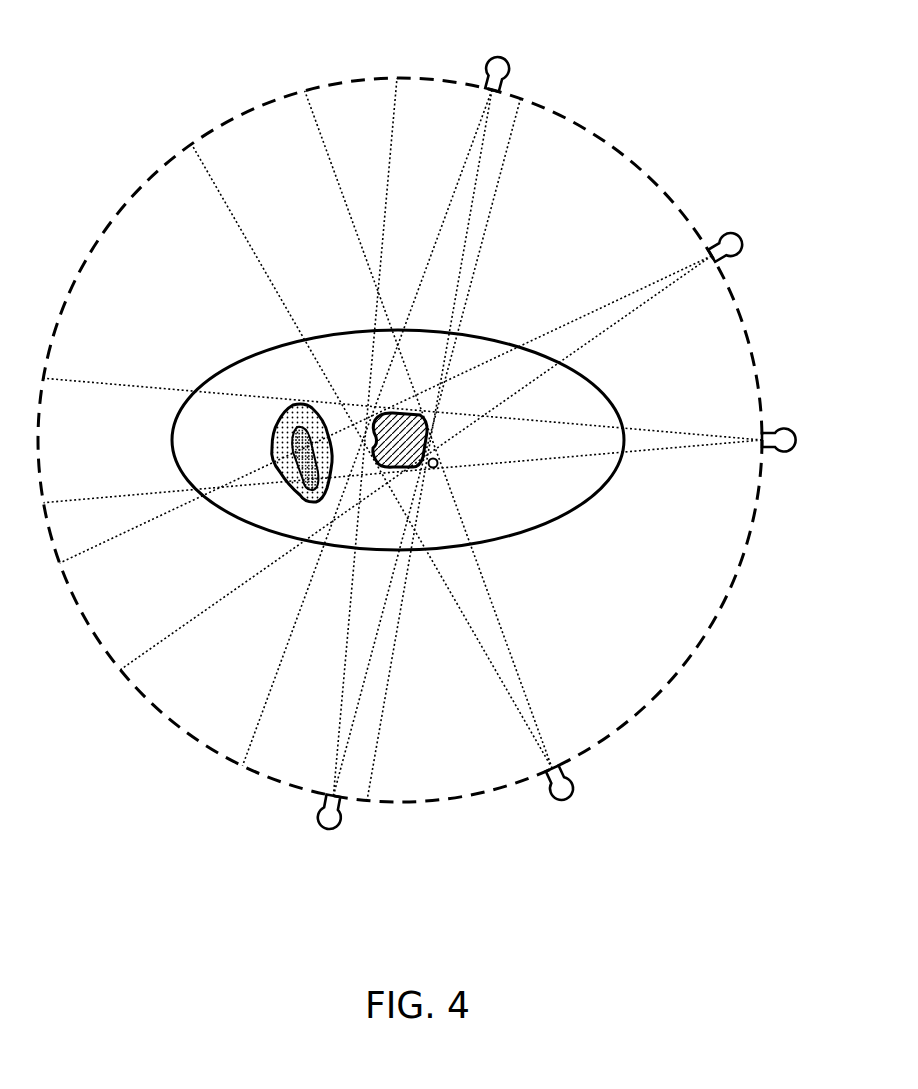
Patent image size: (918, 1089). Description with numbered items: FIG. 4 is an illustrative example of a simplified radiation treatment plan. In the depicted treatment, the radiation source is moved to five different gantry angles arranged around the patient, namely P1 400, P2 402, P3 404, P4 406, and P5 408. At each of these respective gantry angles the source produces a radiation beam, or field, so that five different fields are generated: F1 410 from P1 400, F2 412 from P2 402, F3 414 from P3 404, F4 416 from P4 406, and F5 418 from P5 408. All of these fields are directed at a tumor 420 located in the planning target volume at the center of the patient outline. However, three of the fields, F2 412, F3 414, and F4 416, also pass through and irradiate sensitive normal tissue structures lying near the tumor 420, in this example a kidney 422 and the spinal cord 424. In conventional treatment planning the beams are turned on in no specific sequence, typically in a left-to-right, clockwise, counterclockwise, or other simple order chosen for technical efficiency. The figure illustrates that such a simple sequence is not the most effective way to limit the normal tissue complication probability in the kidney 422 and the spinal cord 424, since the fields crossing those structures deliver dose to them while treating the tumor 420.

The gantry angle P1 400 is at (498, 46).
The gantry angle P2 402 is at (758, 246).
The gantry angle P3 404 is at (809, 441).
The gantry angle P4 406 is at (586, 790).
The gantry angle P5 408 is at (307, 823).
The field F1 410 is at (448, 186).
The field F2 412 is at (658, 277).
The field F3 414 is at (701, 426).
The field F4 416 is at (541, 701).
The field F5 418 is at (325, 764).
The tumor 420 is at (398, 400).
The kidney 422 is at (261, 458).
The spinal cord 424 is at (454, 465).